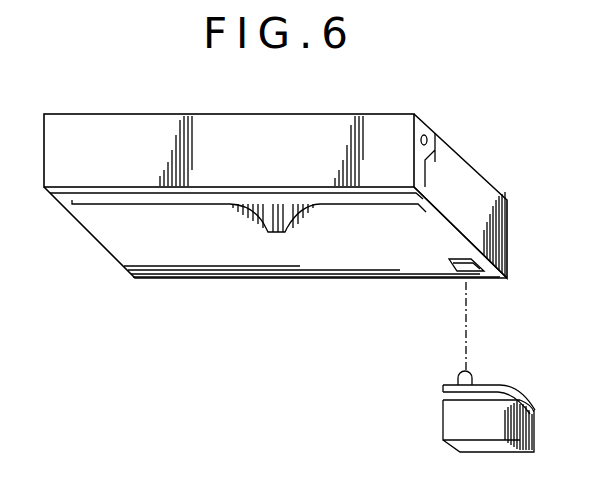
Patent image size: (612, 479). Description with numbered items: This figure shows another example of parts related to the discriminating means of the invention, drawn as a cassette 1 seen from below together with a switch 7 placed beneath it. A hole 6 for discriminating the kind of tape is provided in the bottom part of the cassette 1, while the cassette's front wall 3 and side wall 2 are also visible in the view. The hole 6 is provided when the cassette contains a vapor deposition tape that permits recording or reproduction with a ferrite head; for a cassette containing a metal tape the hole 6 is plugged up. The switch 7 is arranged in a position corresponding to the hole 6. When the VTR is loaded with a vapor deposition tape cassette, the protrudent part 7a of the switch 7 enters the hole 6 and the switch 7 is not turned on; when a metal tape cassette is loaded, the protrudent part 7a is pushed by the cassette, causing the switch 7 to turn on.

The cassette 1 is at (282, 193).
The side wall of housing 2 is at (486, 178).
The front wall of housing 3 is at (378, 113).
The hole 6 is at (477, 280).
The switch 7 is at (511, 397).
The protrudent part 7a is at (476, 376).